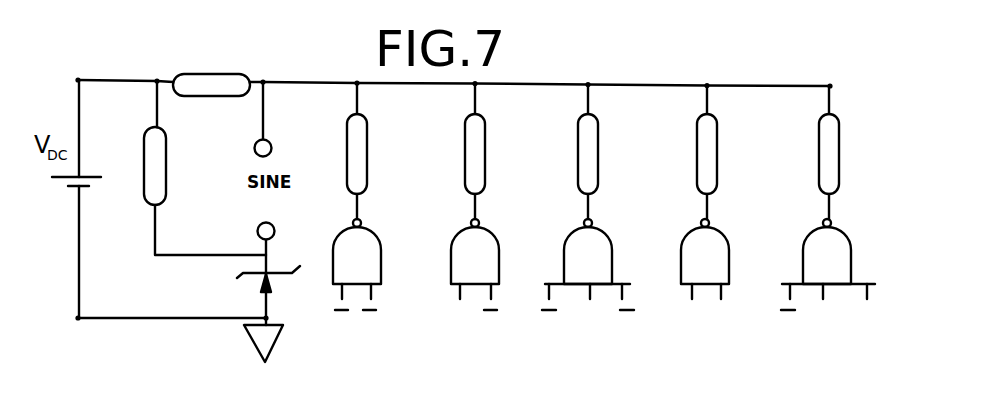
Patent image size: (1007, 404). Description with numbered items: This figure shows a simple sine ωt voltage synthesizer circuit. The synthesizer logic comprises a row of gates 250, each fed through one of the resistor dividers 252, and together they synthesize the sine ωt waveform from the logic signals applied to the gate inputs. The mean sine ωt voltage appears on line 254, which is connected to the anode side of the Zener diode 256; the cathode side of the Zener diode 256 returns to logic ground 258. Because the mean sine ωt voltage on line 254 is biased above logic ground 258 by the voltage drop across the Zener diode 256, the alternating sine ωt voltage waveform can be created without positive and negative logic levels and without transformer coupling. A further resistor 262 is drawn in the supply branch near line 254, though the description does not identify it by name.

The gates 250 is at (723, 231).
The resistor dividers 252 is at (717, 137).
The line 254 is at (166, 251).
The Zener diode 256 is at (279, 282).
The logic ground 258 is at (246, 341).
The resistor 262 is at (167, 154).